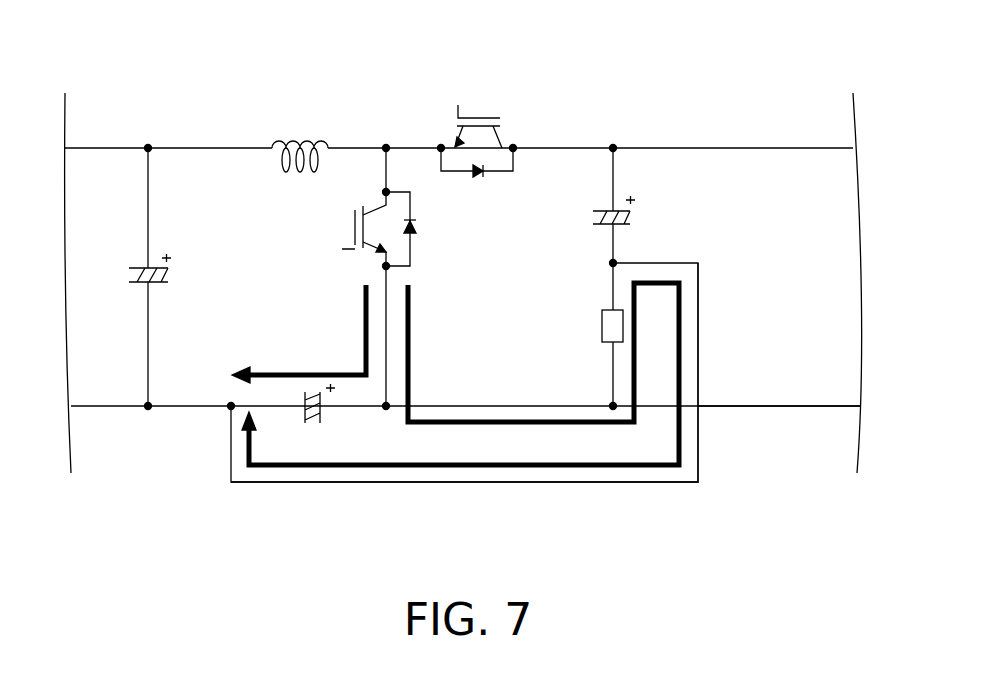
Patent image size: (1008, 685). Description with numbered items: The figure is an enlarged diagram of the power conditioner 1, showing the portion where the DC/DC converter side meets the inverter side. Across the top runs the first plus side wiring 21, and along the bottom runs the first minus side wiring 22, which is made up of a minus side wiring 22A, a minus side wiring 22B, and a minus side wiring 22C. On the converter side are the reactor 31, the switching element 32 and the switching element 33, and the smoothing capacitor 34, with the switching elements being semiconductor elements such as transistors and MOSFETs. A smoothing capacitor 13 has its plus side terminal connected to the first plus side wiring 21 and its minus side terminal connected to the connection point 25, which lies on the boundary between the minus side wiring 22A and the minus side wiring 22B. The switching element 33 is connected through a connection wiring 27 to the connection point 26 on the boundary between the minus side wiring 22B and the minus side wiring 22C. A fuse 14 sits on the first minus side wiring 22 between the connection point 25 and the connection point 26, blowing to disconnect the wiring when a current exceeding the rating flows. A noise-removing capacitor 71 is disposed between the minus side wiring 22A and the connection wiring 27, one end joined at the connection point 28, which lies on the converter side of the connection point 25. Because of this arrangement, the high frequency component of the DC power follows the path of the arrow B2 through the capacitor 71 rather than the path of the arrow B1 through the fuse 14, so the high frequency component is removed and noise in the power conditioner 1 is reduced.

The power conditioner 1 is at (255, 60).
The smoothing capacitor 13 is at (598, 210).
The fuse 14 is at (604, 310).
The first plus side wiring 21 is at (672, 146).
The first minus side wiring 22 is at (572, 570).
The minus side wiring 22A is at (598, 482).
The minus side wiring 22B is at (615, 389).
The minus side wiring 22C is at (722, 407).
The connection point 25 is at (613, 263).
The connection point 26 is at (613, 406).
The connection wiring 27 is at (500, 406).
The connection point 28 is at (231, 408).
The reactor 31 is at (307, 146).
The switching element 32 is at (473, 117).
The switching element 33 is at (353, 224).
The smoothing capacitor 34 is at (131, 267).
The capacitor 71 is at (320, 417).
The arrow B1 is at (368, 467).
The arrow B2 is at (284, 372).